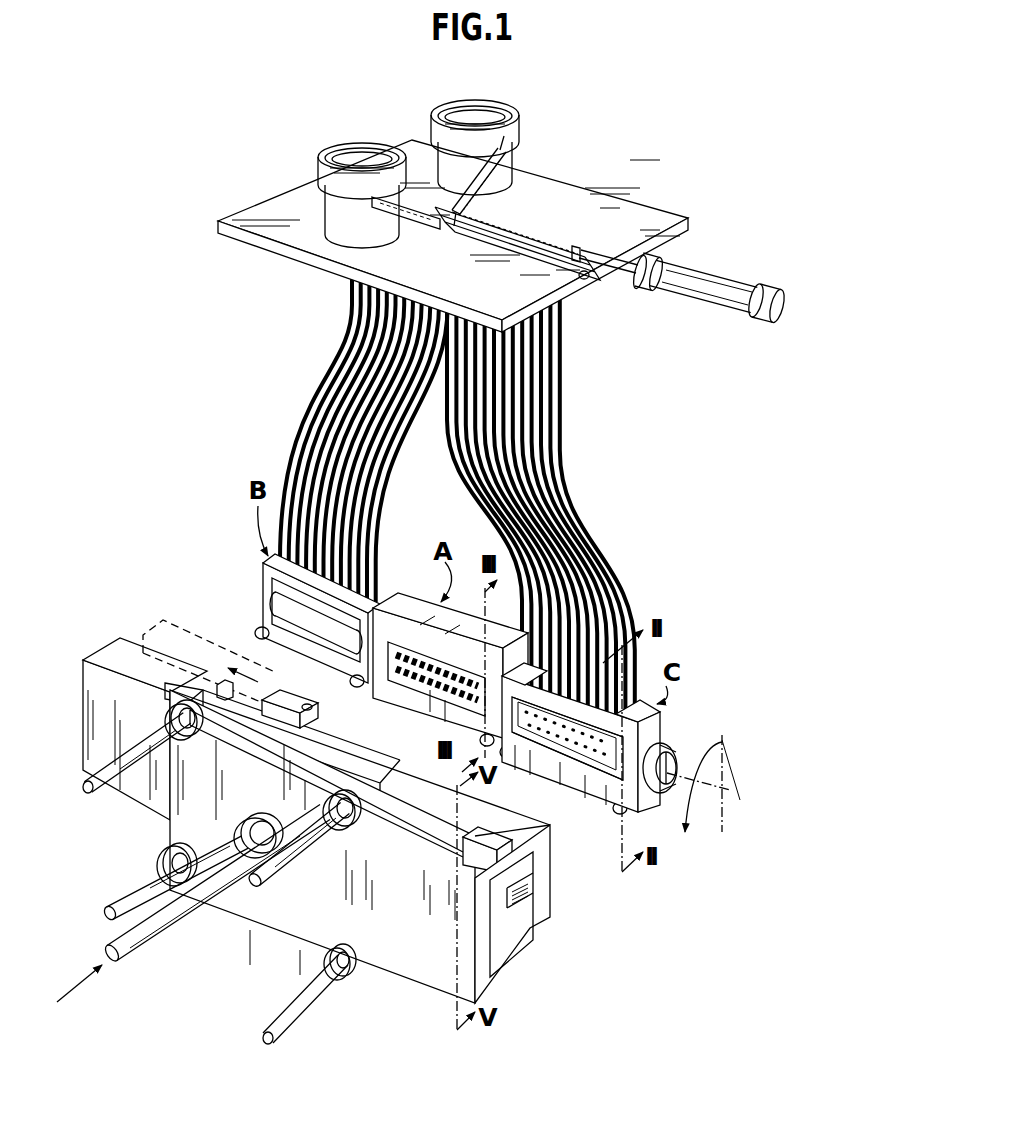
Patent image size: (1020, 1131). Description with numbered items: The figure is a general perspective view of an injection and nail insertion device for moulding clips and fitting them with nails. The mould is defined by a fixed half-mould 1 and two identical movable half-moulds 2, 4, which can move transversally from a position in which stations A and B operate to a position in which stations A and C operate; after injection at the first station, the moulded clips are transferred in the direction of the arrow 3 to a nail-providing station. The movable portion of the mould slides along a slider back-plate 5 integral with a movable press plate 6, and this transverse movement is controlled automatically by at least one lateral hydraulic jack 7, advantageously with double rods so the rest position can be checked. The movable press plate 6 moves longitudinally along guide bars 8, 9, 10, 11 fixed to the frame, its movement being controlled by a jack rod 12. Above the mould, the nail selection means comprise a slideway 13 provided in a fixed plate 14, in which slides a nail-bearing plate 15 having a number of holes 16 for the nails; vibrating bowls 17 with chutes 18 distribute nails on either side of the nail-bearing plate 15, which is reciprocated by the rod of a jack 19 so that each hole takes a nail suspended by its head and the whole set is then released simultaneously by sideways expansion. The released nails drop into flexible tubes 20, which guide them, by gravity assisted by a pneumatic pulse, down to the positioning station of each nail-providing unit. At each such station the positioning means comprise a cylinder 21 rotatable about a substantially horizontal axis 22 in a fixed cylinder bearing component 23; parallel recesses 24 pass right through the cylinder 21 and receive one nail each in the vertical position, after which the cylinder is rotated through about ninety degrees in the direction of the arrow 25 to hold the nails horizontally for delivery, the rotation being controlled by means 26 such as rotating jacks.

The fixed half-mould 1 is at (408, 596).
The movable half-mould 2 is at (355, 712).
The arrow 3 is at (246, 666).
The movable half-mould 4 is at (548, 892).
The slider back-plate 5 is at (490, 975).
The movable press plate 6 is at (296, 926).
The lateral hydraulic jack 7 is at (440, 826).
The guide bar 8 is at (262, 1028).
The guide bar 9 is at (264, 892).
The guide bar 10 is at (94, 800).
The guide bar 11 is at (120, 904).
The jack rod 12 is at (128, 942).
The slideway 13 is at (593, 278).
The fixed plate 14 is at (640, 223).
The nail-bearing plate 15 is at (556, 238).
The holes 16 is at (536, 262).
The vibrating bowls 17 is at (355, 146).
The chutes 18 is at (510, 172).
The jack 19 is at (700, 286).
The flexible tubes 20 is at (606, 545).
The cylinder 21 is at (575, 746).
The axis 22 is at (700, 786).
The cylinder bearing component 23 is at (580, 775).
The recesses 24 is at (550, 758).
The arrow 25 is at (690, 792).
The means for controlling the rotation of the cylinder 26 is at (672, 764).